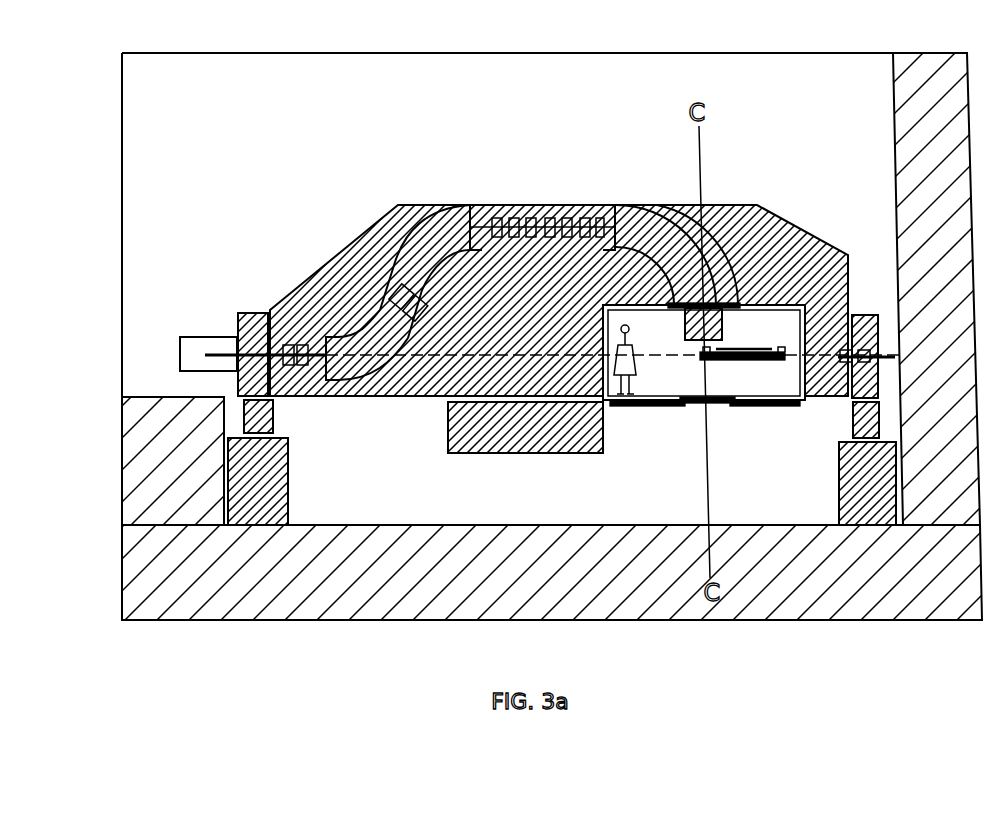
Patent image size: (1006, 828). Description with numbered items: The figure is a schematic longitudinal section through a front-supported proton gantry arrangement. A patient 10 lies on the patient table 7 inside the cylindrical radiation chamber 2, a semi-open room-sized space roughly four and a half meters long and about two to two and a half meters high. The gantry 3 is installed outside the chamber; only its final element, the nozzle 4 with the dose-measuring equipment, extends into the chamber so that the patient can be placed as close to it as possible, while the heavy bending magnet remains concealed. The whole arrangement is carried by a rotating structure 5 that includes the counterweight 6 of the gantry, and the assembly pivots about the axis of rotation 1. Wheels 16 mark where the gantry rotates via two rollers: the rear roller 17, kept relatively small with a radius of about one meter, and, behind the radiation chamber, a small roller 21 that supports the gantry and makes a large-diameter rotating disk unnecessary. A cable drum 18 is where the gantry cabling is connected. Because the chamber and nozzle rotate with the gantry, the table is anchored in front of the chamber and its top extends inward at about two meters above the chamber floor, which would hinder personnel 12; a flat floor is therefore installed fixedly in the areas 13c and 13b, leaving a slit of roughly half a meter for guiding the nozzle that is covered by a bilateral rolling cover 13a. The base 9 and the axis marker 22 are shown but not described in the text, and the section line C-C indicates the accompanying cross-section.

The axis of rotation 1 is at (180, 354).
The radiation chamber 2 is at (660, 389).
The gantry 3 is at (640, 204).
The nozzle 4 is at (722, 326).
The rotating structure 5 is at (495, 204).
The counterweight 6 is at (736, 204).
The patient table 7 is at (768, 361).
The foundation 9 is at (395, 523).
The patient 10 is at (733, 361).
The personnel 12 is at (633, 343).
The bilateral rolling cover 13a is at (718, 404).
The fixed floor area 13b is at (768, 406).
The fixed floor area 13c is at (645, 406).
The wheels 16 is at (278, 419).
The rear roller 17 is at (258, 313).
The cable drum 18 is at (209, 337).
The small roller 21 is at (880, 329).
The axis of rotation 22 is at (882, 358).